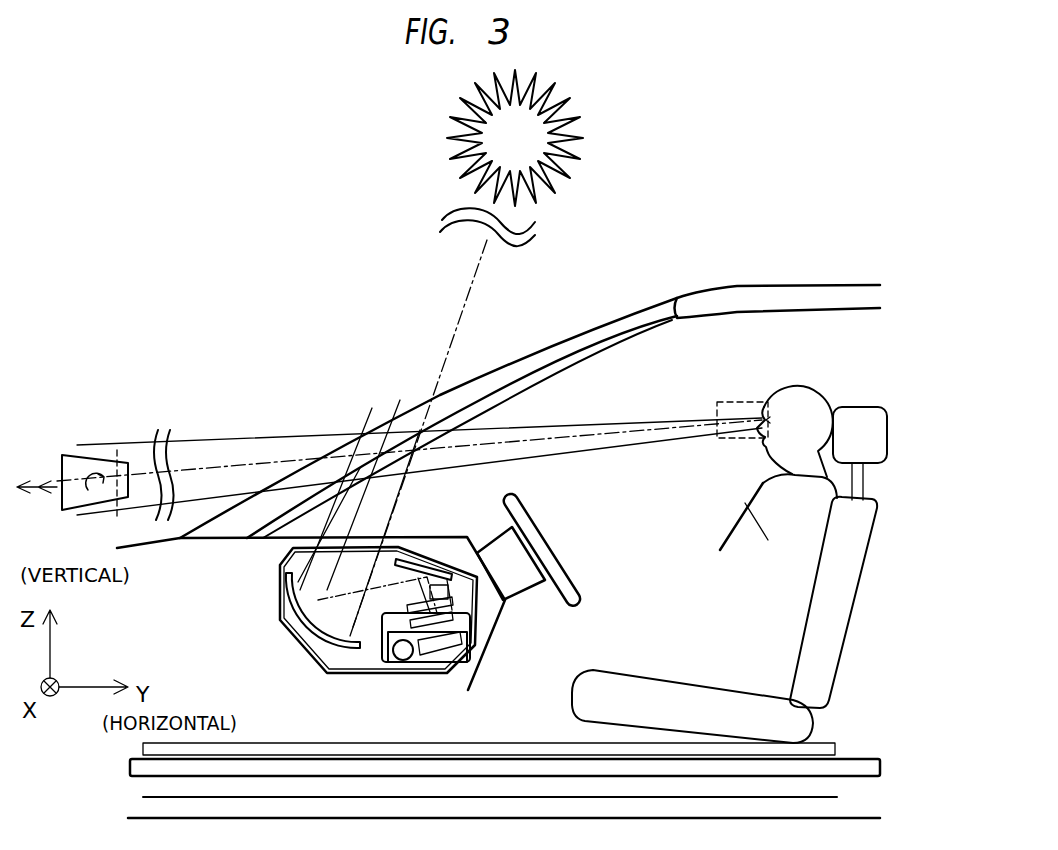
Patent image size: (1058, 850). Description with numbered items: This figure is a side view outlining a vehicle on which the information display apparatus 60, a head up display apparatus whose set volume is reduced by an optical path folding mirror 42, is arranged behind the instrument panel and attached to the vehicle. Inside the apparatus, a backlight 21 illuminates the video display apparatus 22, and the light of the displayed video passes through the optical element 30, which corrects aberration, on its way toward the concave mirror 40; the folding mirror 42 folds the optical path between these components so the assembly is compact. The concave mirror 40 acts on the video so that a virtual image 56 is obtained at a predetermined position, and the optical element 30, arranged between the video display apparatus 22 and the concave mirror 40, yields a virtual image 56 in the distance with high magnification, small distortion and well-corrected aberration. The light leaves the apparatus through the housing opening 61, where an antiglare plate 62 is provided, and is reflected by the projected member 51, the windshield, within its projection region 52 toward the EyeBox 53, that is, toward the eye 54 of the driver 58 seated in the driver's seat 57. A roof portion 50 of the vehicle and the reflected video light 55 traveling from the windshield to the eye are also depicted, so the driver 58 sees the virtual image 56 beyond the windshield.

The backlight 21 is at (447, 672).
The video display apparatus 22 is at (469, 640).
The optical element 30 is at (470, 612).
The concave mirror 40 is at (289, 605).
The optical path folding mirror 42 is at (440, 556).
The vehicle roof 50 is at (741, 284).
The projected member 51 is at (560, 347).
The projection region 52 is at (367, 450).
The EyeBox 53 is at (753, 402).
The eye 54 is at (745, 417).
The display light 55 is at (590, 450).
The virtual image 56 is at (118, 450).
The driver's seat 57 is at (870, 540).
The driver 58 is at (745, 505).
The information display apparatus 60 is at (331, 675).
The housing opening 61 is at (292, 540).
The antiglare plate 62 is at (382, 533).